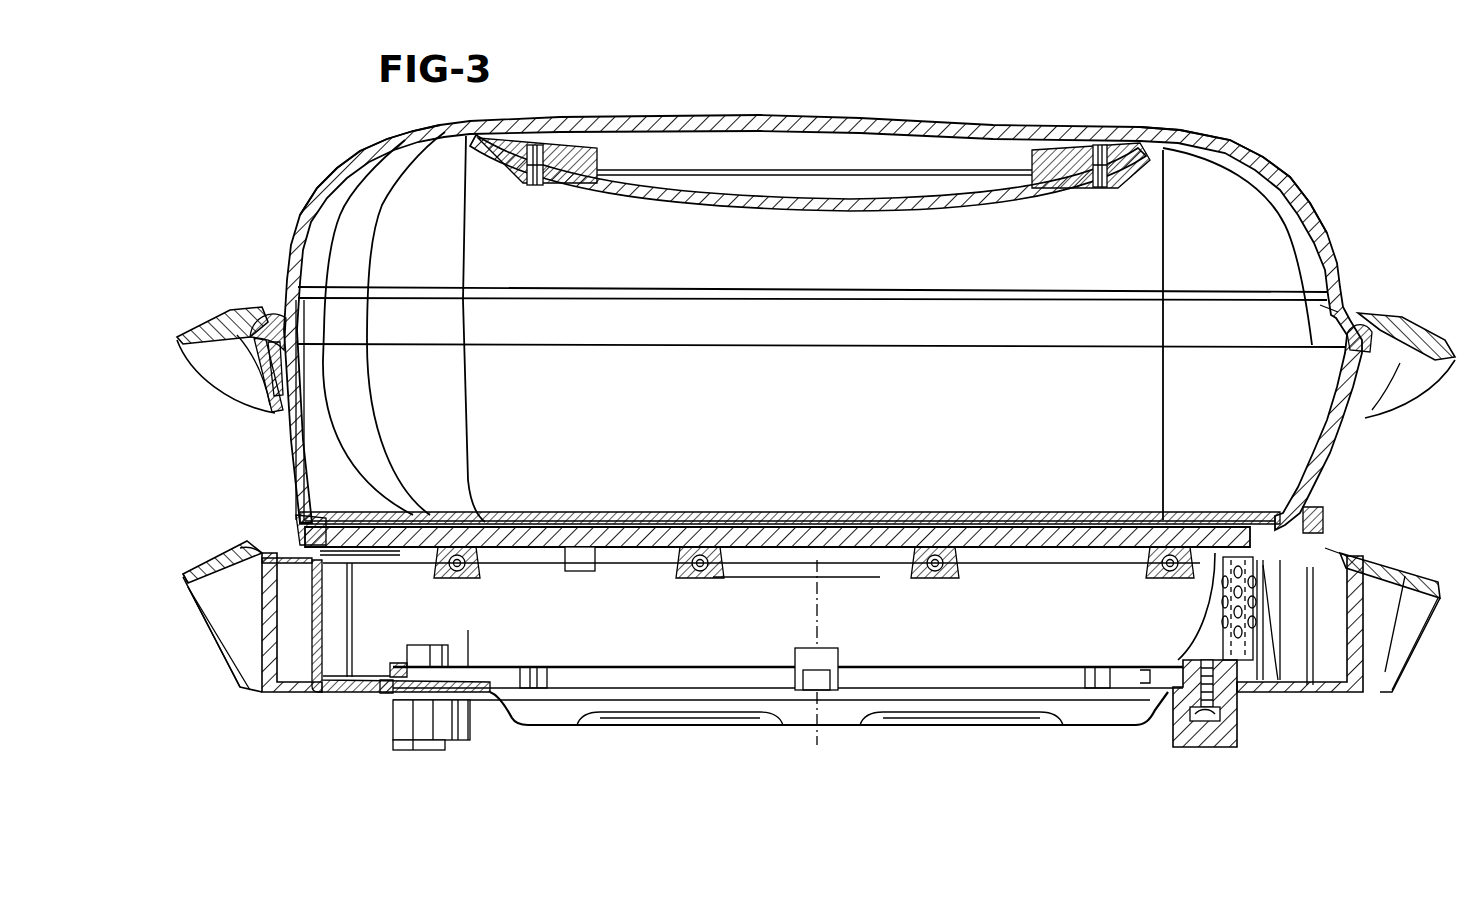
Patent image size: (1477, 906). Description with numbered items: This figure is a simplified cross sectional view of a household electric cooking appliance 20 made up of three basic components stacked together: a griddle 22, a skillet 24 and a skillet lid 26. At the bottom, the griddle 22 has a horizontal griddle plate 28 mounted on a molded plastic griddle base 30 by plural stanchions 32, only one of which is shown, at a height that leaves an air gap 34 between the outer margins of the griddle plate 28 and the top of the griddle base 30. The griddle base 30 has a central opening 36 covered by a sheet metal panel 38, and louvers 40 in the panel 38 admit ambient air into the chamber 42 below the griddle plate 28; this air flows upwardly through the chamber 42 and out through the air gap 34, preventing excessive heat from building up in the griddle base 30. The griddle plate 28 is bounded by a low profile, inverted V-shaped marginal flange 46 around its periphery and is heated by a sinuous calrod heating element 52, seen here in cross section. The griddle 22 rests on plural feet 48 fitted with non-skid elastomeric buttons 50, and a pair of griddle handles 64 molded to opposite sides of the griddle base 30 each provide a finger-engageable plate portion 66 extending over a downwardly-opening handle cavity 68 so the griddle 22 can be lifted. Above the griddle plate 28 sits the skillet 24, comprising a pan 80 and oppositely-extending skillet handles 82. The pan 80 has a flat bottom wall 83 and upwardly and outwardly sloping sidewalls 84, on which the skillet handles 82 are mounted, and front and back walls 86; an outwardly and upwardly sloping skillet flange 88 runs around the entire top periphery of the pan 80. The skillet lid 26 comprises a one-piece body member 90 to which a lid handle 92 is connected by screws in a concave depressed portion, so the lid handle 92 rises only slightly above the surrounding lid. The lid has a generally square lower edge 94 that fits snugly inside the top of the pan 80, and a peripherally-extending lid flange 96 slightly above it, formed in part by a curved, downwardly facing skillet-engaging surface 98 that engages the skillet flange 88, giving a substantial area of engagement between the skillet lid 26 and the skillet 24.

The household electric cooking appliance 20 is at (974, 102).
The griddle 22 is at (1370, 666).
The skillet 24 is at (1337, 440).
The skillet lid 26 is at (1240, 142).
The griddle plate 28 is at (547, 540).
The griddle base 30 is at (318, 665).
The stanchion 32 is at (1222, 602).
The air gap 34 is at (282, 540).
The central opening 36 is at (692, 678).
The sheet metal panel 38 is at (545, 728).
The louvers 40 is at (890, 728).
The chamber 42 is at (922, 647).
The marginal flange 46 is at (302, 518).
The feet 48 is at (400, 710).
The non-skid elastomeric buttons 50 is at (425, 732).
The calrod heating element 52 is at (452, 572).
The griddle handles 64 is at (208, 551).
The finger-engageable plate portion 66 is at (200, 577).
The handle cavity 68 is at (205, 583).
The pan 80 is at (288, 436).
The skillet handles 82 is at (222, 306).
The bottom wall 83 is at (935, 527).
The sidewalls 84 is at (300, 455).
The front and back walls 86 is at (762, 412).
The skillet flange 88 is at (1328, 314).
The one-piece body member 90 is at (345, 178).
The lid handle 92 is at (772, 126).
The lower edge 94 is at (545, 345).
The lid flange 96 is at (1354, 315).
The skillet-engaging surface 98 is at (262, 303).